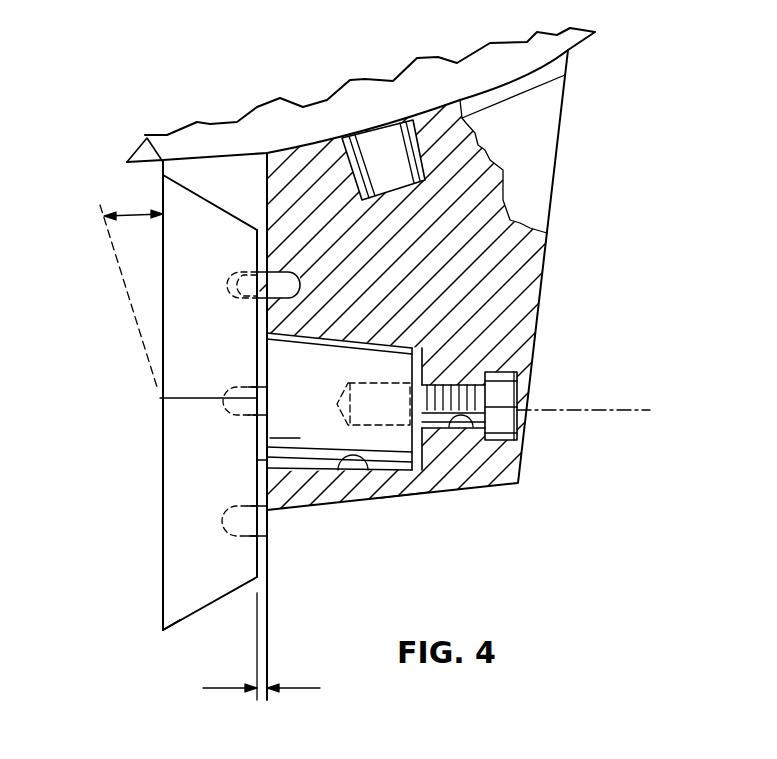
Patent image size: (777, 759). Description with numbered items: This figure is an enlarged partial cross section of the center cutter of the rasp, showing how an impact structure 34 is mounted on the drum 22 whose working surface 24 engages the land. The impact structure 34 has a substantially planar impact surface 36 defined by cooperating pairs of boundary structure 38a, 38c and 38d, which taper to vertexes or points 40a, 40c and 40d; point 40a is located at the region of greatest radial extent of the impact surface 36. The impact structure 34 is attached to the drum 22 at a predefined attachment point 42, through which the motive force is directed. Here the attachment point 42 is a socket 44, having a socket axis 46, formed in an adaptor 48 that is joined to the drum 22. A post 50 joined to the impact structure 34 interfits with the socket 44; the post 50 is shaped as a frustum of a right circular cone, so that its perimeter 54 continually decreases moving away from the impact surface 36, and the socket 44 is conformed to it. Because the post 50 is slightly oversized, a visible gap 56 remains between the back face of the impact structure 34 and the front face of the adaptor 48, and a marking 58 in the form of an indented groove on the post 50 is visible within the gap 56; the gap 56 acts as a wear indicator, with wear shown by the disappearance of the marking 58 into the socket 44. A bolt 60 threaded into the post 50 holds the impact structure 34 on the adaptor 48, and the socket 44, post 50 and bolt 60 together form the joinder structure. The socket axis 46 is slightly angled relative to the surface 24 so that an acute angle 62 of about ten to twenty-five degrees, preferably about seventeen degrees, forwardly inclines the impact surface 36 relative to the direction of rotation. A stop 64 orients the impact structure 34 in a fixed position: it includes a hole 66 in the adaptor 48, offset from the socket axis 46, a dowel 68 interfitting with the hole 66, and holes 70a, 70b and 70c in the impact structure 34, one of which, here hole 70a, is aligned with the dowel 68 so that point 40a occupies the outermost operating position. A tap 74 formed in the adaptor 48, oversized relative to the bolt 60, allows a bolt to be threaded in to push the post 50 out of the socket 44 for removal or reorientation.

The drum 22 is at (350, 110).
The surface 24 is at (595, 33).
The impact structure 34 is at (137, 593).
The impact surface 36 is at (163, 522).
The boundary structure 38a is at (210, 583).
The boundary structure 38c is at (215, 227).
The boundary structure 38d is at (186, 390).
The vertex or point 40a is at (160, 632).
The vertex or point 40c is at (148, 140).
The vertex or point 40d is at (160, 398).
The attachment point 42 is at (403, 486).
The socket 44 is at (356, 472).
The socket axis 46 is at (583, 362).
The adaptor 48 is at (295, 497).
The post 50 is at (339, 401).
The perimeter of the post 54 is at (262, 440).
The gap 56 is at (303, 692).
The marking 58 is at (258, 462).
The bolt 60 is at (520, 432).
The acute angle 62 is at (130, 213).
The stop 64 is at (193, 290).
The hole 66 is at (300, 290).
The dowel 68 is at (298, 268).
The hole 70a is at (228, 283).
The hole 70b is at (232, 390).
The hole 70c is at (247, 535).
The tap 74 is at (460, 430).